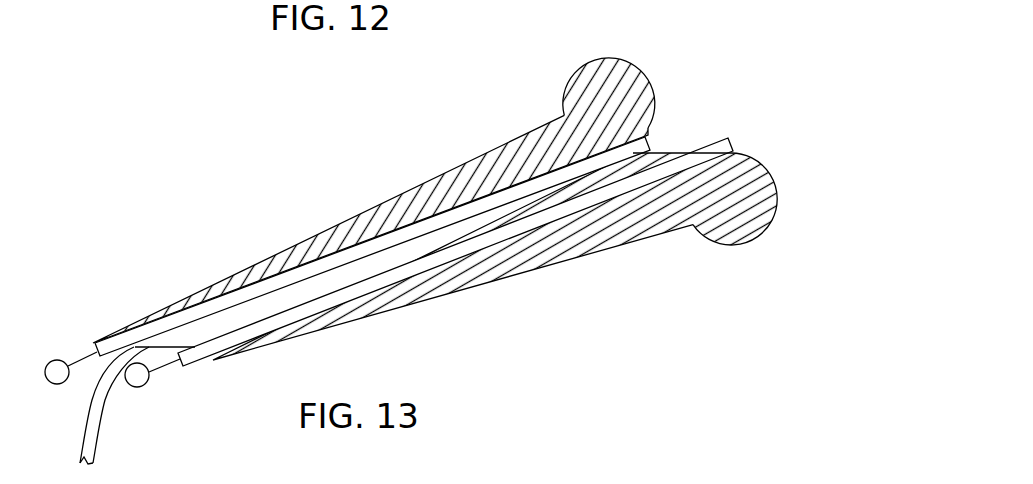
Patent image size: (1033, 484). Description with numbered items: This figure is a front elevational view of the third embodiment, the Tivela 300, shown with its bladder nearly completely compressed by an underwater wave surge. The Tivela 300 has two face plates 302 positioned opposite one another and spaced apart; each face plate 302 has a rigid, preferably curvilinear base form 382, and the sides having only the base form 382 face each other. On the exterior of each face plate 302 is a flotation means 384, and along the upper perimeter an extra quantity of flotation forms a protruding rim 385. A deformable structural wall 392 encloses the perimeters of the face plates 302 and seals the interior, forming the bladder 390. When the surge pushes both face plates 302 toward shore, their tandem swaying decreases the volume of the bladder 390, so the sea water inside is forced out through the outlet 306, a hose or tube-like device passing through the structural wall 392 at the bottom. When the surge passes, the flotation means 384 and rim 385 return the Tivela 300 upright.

The Tivela 300 is at (718, 24).
The face plate 302 is at (418, 185).
The outlet 306 is at (97, 446).
The base form 382 is at (278, 280).
The flotation means 384 is at (425, 295).
The rim 385 is at (600, 59).
The bladder 390 is at (510, 213).
The structural wall 392 is at (663, 152).